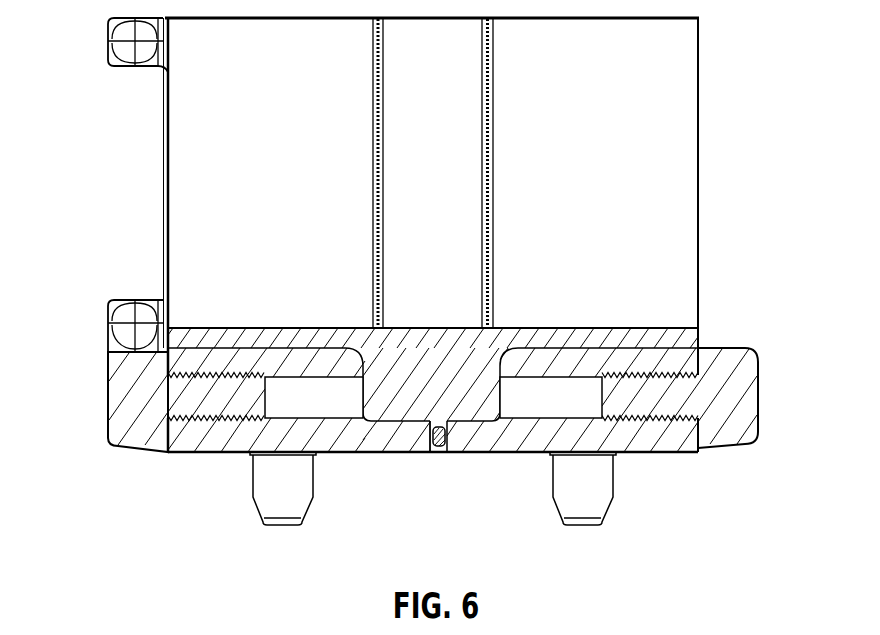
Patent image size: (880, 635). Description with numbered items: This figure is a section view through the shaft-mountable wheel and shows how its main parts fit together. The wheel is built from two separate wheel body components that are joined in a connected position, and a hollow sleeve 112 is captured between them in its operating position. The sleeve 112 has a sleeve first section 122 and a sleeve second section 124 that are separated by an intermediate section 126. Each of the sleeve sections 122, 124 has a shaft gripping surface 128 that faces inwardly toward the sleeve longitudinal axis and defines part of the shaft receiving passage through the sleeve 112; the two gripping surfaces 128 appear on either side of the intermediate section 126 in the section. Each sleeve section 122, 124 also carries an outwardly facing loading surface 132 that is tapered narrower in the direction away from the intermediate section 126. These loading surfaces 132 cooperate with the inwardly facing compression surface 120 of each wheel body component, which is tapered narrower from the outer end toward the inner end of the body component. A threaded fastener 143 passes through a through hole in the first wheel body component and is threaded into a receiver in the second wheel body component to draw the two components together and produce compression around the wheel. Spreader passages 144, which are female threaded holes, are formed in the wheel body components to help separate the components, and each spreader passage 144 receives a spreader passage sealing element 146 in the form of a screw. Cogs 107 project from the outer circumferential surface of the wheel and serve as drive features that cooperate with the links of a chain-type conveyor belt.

The cog 107 is at (282, 527).
The hollow sleeve 112 is at (722, 124).
The compression surface 120 is at (235, 362).
The sleeve first section 122 is at (166, 189).
The sleeve second section 124 is at (700, 197).
The intermediate section 126 is at (450, 400).
The shaft gripping surface 128 is at (252, 172).
The loading surface 132 is at (272, 340).
The threaded fastener 143 is at (108, 37).
The spreader passage 144 is at (328, 400).
The spreader passage sealing element 146 is at (108, 416).